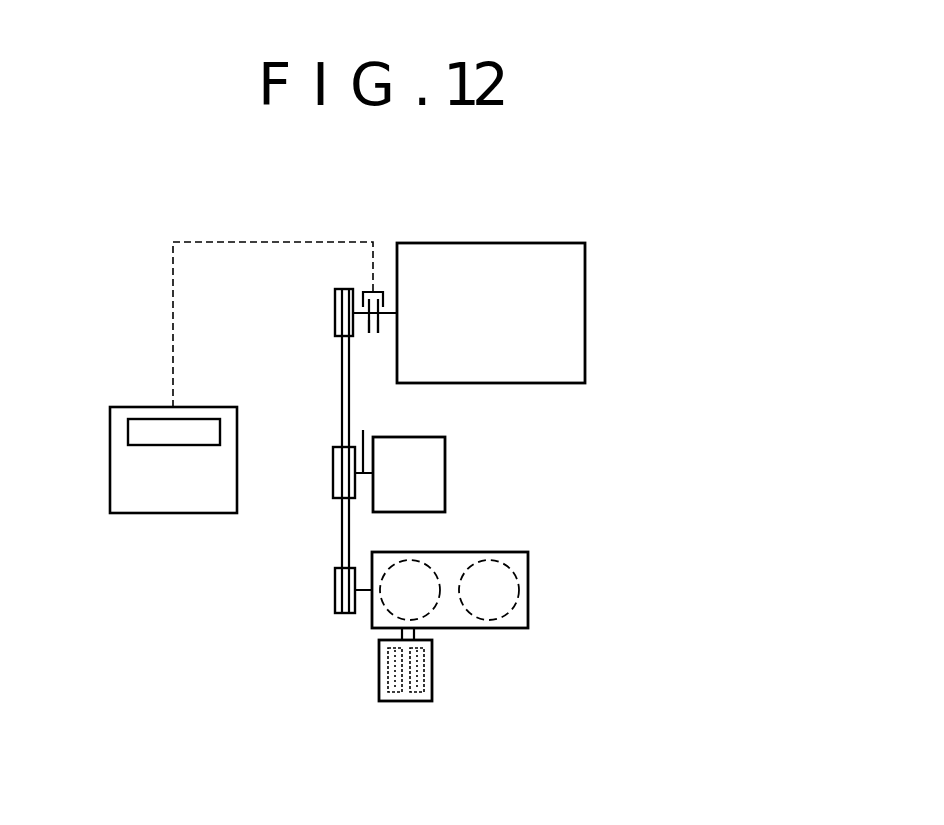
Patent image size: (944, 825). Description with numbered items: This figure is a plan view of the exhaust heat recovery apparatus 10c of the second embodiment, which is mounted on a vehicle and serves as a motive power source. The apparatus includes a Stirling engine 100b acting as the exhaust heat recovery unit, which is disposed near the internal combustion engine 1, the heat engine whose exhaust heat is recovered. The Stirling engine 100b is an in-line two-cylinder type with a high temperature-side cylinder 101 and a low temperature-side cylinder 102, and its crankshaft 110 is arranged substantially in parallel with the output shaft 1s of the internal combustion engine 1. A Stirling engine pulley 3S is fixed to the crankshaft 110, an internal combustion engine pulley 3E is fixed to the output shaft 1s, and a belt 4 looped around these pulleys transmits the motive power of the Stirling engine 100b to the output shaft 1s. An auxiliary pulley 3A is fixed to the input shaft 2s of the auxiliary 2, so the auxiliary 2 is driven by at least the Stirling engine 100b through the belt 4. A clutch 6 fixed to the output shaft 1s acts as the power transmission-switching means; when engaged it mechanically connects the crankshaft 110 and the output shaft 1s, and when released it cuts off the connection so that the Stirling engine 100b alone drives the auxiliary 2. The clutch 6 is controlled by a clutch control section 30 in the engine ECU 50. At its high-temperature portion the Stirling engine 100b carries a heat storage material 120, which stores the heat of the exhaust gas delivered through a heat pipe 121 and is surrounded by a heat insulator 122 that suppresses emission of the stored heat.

The internal combustion engine 1 is at (565, 315).
The output shaft 1s is at (390, 306).
The auxiliary 2 is at (430, 473).
The input shaft 2s is at (363, 430).
The internal combustion engine pulley 3E is at (335, 313).
The auxiliary pulley 3A is at (333, 472).
The Stirling engine pulley 3S is at (335, 591).
The belt 4 is at (341, 541).
The clutch 6 is at (376, 343).
The exhaust heat recovery apparatus 10c is at (272, 410).
The clutch control section 30 is at (128, 430).
The engine ECU 50 is at (124, 487).
The Stirling engine 100b is at (513, 590).
The high temperature-side cylinder 101 is at (440, 560).
The low temperature-side cylinder 102 is at (522, 560).
The crankshaft 110 is at (365, 592).
The heat storage material 120 is at (424, 663).
The heat pipe 121 is at (416, 632).
The heat insulator 122 is at (432, 689).